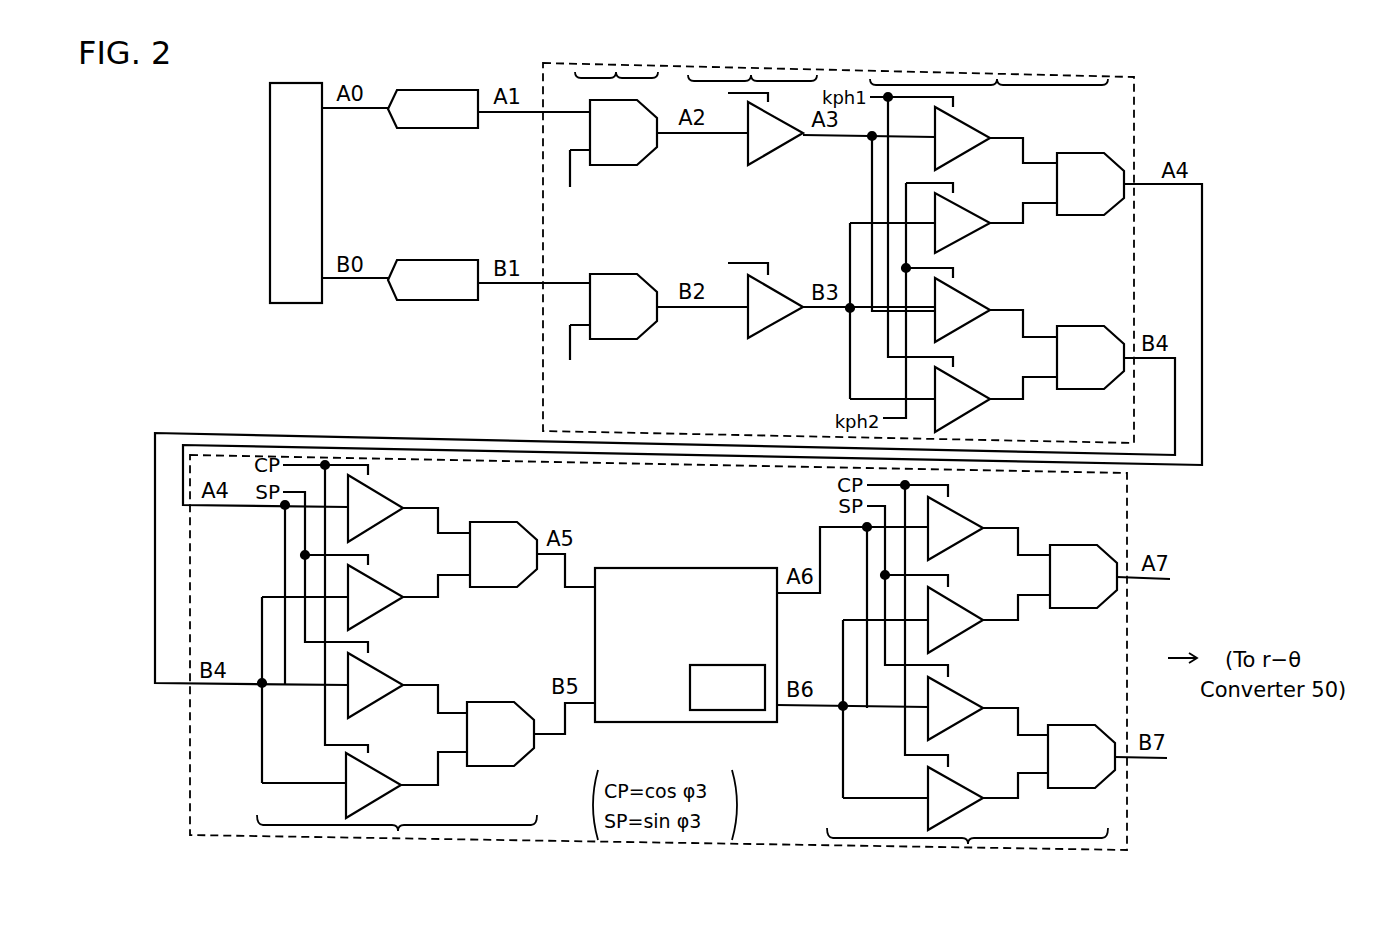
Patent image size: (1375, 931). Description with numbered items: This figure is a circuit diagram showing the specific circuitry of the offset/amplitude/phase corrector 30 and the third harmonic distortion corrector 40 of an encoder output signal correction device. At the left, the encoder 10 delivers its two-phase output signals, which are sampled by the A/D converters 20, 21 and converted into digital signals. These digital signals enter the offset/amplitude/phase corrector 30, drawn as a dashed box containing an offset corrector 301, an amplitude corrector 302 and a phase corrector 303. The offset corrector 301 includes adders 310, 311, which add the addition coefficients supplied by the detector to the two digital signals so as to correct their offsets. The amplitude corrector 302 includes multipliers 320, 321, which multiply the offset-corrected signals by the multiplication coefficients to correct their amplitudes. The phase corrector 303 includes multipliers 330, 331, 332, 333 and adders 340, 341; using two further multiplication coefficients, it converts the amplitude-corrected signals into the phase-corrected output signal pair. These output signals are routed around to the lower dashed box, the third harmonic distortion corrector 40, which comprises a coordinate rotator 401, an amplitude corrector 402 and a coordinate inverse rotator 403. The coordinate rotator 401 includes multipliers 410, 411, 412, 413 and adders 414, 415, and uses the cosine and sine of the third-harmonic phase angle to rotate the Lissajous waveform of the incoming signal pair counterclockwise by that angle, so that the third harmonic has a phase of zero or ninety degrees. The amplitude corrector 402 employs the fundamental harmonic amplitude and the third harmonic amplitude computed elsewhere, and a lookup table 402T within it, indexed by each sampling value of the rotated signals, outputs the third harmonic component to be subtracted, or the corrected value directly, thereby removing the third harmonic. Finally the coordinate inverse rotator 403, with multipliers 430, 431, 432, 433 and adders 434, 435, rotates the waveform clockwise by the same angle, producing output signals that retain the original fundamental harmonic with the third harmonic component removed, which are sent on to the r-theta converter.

The encoder 10 is at (292, 83).
The A/D converter 20 is at (423, 90).
The A/D converter 21 is at (434, 300).
The offset/amplitude/phase corrector 30 is at (1140, 88).
The offset corrector 301 is at (616, 72).
The amplitude corrector 302 is at (751, 75).
The phase corrector 303 is at (997, 79).
The adder 310 is at (620, 165).
The adder 311 is at (609, 274).
The multiplier 320 is at (772, 158).
The multiplier 321 is at (781, 284).
The multiplier 330 is at (974, 129).
The multiplier 331 is at (974, 215).
The multiplier 332 is at (974, 298).
The multiplier 333 is at (976, 389).
The adder 340 is at (1080, 153).
The adder 341 is at (1080, 326).
The third harmonic distortion corrector 40 is at (1130, 808).
The coordinate rotator 401 is at (398, 831).
The amplitude corrector 402 is at (655, 722).
The lookup table 402T is at (746, 710).
The coordinate inverse rotator 403 is at (968, 844).
The multiplier 410 is at (391, 497).
The multiplier 411 is at (391, 586).
The multiplier 412 is at (391, 674).
The multiplier 413 is at (391, 774).
The adder 414 is at (497, 522).
The adder 415 is at (496, 702).
The multiplier 430 is at (972, 521).
The multiplier 431 is at (972, 608).
The multiplier 432 is at (972, 696).
The multiplier 433 is at (972, 786).
The adder 434 is at (1080, 545).
The adder 435 is at (1080, 725).